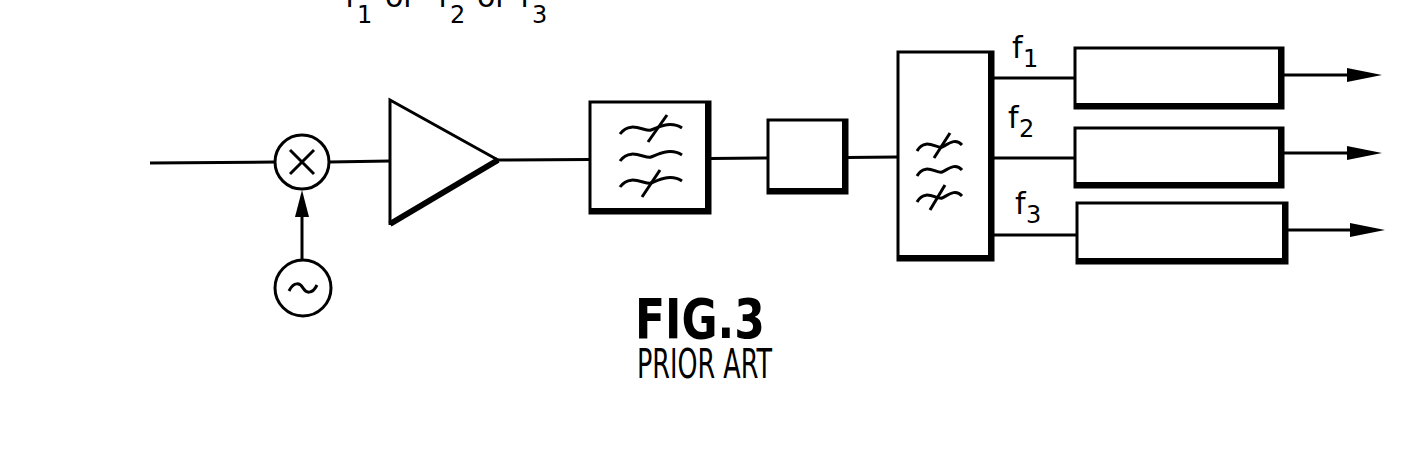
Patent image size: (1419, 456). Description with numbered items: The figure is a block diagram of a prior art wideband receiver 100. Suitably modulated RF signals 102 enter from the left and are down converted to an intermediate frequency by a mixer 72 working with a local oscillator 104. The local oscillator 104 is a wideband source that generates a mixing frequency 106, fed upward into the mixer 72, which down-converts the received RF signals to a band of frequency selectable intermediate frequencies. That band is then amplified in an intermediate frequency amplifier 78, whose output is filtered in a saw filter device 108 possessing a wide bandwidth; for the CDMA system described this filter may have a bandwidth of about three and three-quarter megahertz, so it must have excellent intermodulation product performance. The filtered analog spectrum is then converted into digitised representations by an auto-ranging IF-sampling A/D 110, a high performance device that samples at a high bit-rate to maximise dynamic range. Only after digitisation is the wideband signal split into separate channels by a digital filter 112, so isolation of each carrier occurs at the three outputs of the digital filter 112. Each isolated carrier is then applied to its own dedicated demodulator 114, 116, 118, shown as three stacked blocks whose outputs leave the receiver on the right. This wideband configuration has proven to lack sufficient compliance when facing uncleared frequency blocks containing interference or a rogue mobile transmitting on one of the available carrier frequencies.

The prior art wideband receiver 100 is at (225, 92).
The mixer 72 is at (302, 134).
The intermediate frequency amplifier 78 is at (452, 150).
The modulated RF signals 102 is at (215, 168).
The local oscillator 104 is at (333, 277).
The mixing frequency 106 is at (298, 237).
The saw filter device 108 is at (657, 108).
The auto-ranging IF-sampling A/D 110 is at (790, 123).
The digital filter 112 is at (915, 90).
The demodulator 114 is at (1160, 50).
The demodulator 116 is at (1263, 168).
The demodulator 118 is at (1275, 248).